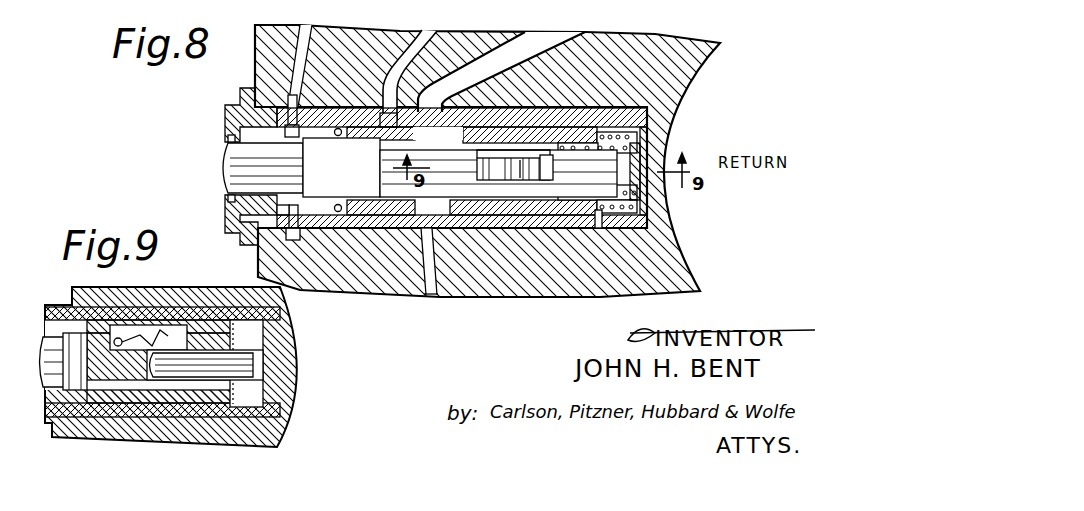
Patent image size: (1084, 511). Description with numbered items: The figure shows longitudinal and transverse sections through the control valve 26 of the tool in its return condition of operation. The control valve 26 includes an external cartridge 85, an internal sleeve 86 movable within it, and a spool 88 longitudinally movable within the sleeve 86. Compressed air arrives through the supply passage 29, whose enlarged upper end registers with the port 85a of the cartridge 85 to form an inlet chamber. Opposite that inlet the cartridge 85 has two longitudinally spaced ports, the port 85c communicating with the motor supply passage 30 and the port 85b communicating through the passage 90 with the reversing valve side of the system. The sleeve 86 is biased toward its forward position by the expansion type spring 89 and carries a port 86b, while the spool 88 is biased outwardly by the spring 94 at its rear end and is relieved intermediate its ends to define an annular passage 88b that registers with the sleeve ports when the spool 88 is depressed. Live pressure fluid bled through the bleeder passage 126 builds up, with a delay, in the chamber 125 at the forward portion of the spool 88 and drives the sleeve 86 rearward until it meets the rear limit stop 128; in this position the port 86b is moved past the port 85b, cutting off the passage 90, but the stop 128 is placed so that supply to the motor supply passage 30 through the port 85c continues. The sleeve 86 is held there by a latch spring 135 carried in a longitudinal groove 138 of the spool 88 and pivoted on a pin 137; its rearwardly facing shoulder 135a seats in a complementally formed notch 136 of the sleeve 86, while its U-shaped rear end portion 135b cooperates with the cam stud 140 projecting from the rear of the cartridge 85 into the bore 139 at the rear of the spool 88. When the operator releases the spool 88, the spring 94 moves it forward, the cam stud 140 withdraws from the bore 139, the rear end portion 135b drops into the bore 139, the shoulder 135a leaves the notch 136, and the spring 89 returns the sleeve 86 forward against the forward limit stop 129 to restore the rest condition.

In FIG. 8, the control valve 26 is at (642, 105).
In FIG. 9, the control valve 26 is at (268, 427).
In FIG. 8, the supply passage 29 is at (426, 297).
In FIG. 8, the motor supply passage 30 is at (537, 40).
In FIG. 8, the external cartridge 85 is at (633, 110).
In FIG. 9, the external cartridge 85 is at (226, 307).
In FIG. 8, the port 85a is at (432, 293).
In FIG. 8, the port 85b is at (385, 104).
In FIG. 8, the port 85c is at (443, 100).
In FIG. 8, the internal sleeve 86 is at (563, 217).
In FIG. 8, the port 86b is at (440, 145).
In FIG. 8, the spool 88 is at (233, 171).
In FIG. 9, the spool 88 is at (60, 392).
In FIG. 8, the annular passage 88b is at (380, 163).
In FIG. 9, the annular passage 88b is at (53, 350).
In FIG. 8, the expansion type spring 89 is at (640, 208).
In FIG. 9, the expansion type spring 89 is at (258, 400).
In FIG. 8, the passage 90 is at (430, 33).
In FIG. 8, the expansion type spring 94 is at (637, 193).
In FIG. 9, the expansion type spring 94 is at (253, 386).
In FIG. 8, the chamber 125 is at (240, 118).
In FIG. 8, the bleeder passage 126 is at (305, 55).
In FIG. 8, the rear limit stop 128 is at (598, 230).
In FIG. 8, the forward limit stop 129 is at (242, 238).
In FIG. 8, the latch spring 135 is at (500, 182).
In FIG. 8, the shoulder 135a is at (547, 161).
In FIG. 9, the shoulder 135a is at (173, 325).
In FIG. 8, the rear end portion 135b is at (553, 168).
In FIG. 8, the notch 136 is at (522, 134).
In FIG. 9, the notch 136 is at (152, 397).
In FIG. 8, the pin 137 is at (462, 206).
In FIG. 9, the pin 137 is at (120, 338).
In FIG. 8, the longitudinal groove 138 is at (536, 176).
In FIG. 9, the longitudinal groove 138 is at (157, 330).
In FIG. 9, the bore 139 is at (74, 392).
In FIG. 8, the cam stud 140 is at (617, 160).
In FIG. 9, the cam stud 140 is at (253, 367).